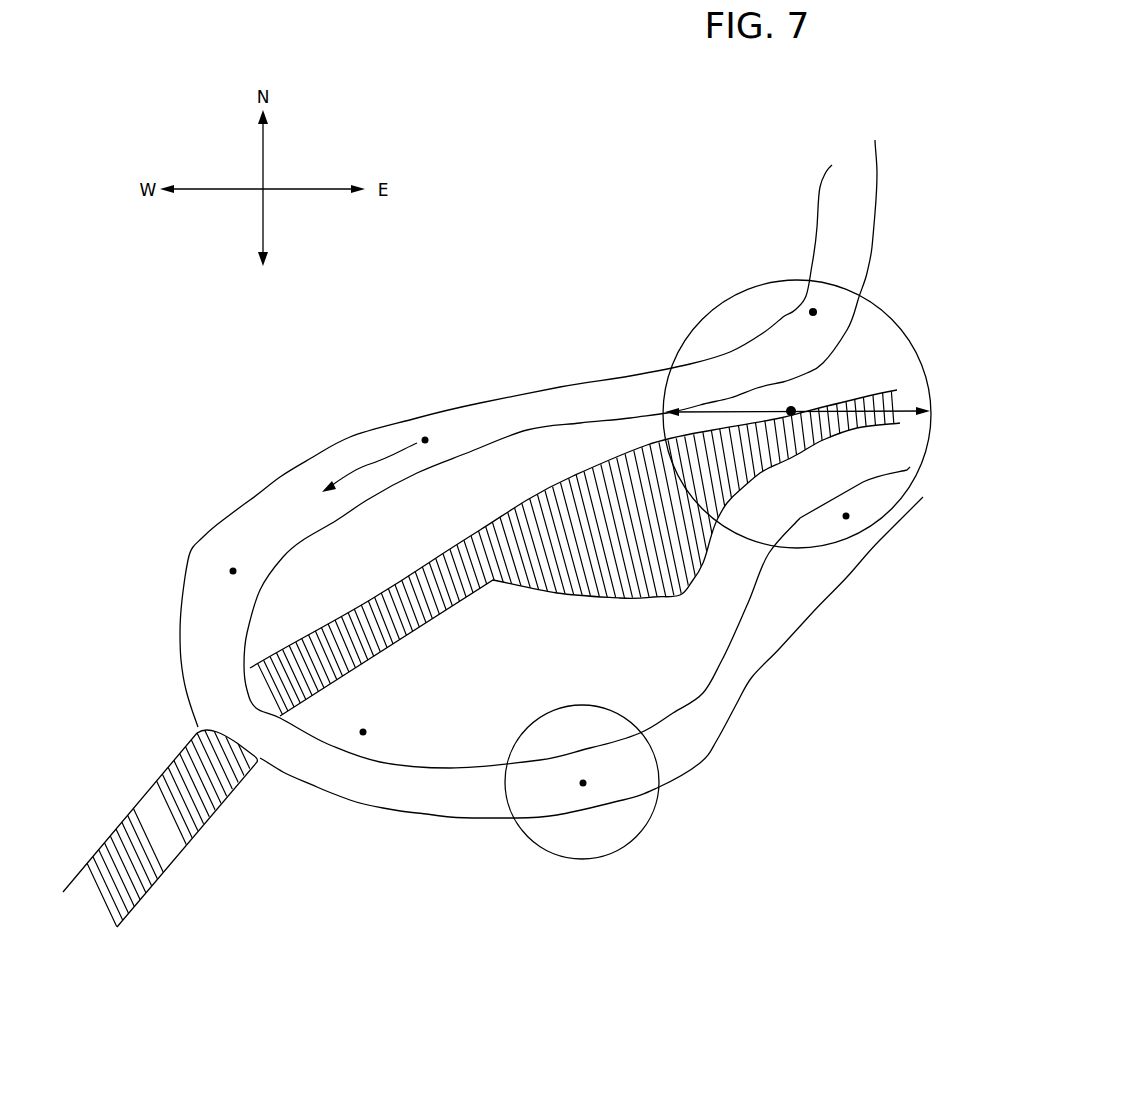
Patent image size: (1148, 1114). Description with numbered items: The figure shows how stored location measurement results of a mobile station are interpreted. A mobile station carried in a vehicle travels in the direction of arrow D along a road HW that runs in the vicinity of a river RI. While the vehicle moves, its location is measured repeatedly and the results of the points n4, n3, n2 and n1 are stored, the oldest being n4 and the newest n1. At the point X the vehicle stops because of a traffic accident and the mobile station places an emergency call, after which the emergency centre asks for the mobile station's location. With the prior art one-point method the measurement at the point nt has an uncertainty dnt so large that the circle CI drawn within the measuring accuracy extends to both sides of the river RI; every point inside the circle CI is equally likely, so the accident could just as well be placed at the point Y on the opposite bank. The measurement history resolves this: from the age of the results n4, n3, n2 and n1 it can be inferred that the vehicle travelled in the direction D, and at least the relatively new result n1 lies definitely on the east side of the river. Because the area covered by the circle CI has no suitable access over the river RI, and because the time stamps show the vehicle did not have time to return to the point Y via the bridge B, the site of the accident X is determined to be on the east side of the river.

The measurement result point n1 is at (580, 783).
The measurement result point n2 is at (366, 732).
The measurement result point n3 is at (230, 571).
The measurement result point n4 is at (425, 438).
The measurement point nt is at (789, 408).
The uncertainty of measurement result dnt is at (724, 409).
The direction of travel arrow D is at (367, 465).
The bridge B is at (246, 723).
The road HW is at (583, 479).
The river RI is at (175, 830).
The site of accident X is at (846, 519).
The alternative location point Y is at (811, 310).
The circle CI is at (823, 545).